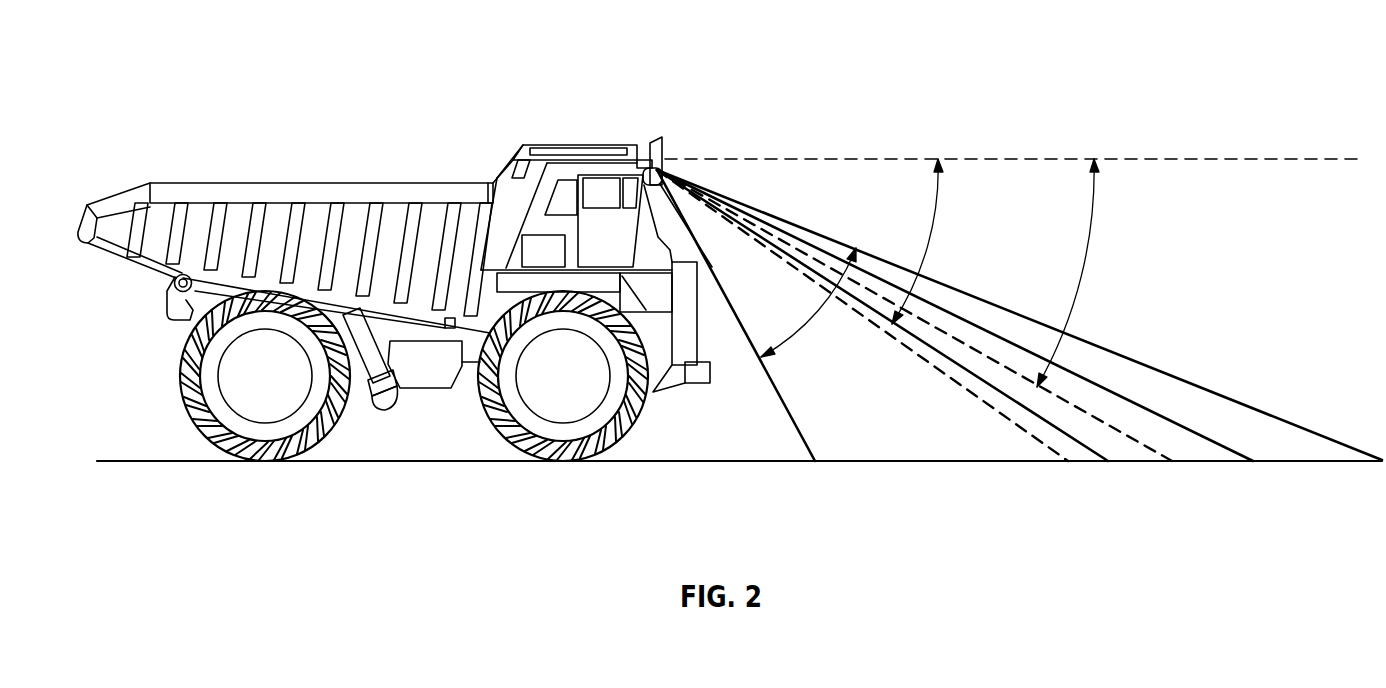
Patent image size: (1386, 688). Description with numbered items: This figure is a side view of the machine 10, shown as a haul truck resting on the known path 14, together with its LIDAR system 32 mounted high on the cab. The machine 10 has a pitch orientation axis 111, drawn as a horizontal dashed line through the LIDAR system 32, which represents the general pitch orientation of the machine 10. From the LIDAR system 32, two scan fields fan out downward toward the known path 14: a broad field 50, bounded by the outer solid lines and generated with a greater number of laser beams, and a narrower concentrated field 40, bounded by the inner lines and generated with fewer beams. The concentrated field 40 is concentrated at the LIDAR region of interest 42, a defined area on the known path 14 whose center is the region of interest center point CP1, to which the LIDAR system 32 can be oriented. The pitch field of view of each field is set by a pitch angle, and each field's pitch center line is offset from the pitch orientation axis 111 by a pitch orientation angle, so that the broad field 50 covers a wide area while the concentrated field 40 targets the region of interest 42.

The machine 10 is at (287, 67).
The known path 14 is at (366, 464).
The LIDAR system 32 is at (652, 160).
The concentrated field 40 is at (882, 272).
The LIDAR region of interest 42 is at (1193, 463).
The broad field 50 is at (790, 418).
The pitch orientation axis 111 is at (877, 158).
The region of interest center point CP1 is at (1177, 464).